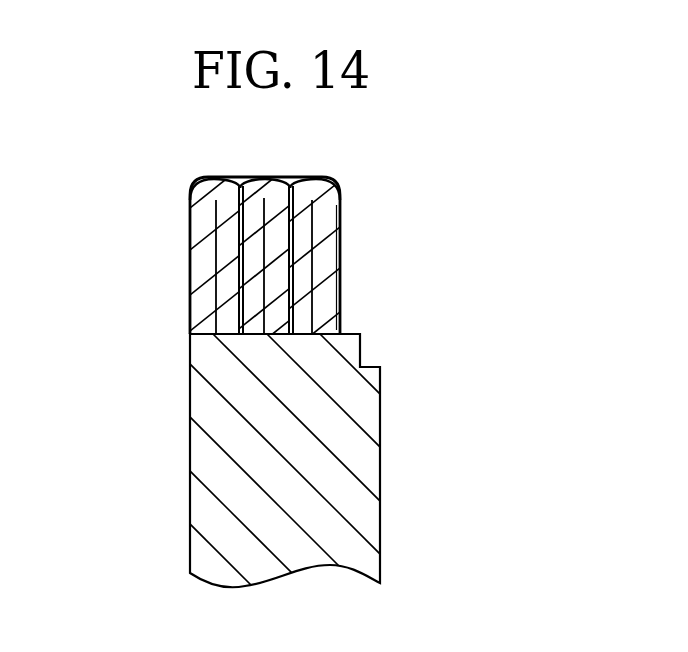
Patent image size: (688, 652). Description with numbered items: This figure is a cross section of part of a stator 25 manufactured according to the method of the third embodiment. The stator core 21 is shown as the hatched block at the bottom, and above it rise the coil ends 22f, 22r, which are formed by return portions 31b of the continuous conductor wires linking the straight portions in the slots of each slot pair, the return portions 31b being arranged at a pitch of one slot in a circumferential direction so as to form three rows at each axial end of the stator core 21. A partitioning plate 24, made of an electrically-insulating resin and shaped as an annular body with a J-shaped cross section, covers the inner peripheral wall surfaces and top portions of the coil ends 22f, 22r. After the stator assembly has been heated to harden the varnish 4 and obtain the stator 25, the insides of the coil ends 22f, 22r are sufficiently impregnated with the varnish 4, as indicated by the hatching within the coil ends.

The stator 25 is at (104, 248).
The stator core 21 is at (190, 450).
The partitioning plate 24 is at (188, 300).
The varnish 4 is at (341, 218).
The return portion 31b is at (338, 183).
The coil end 22f is at (344, 262).
The coil end 22r is at (345, 263).